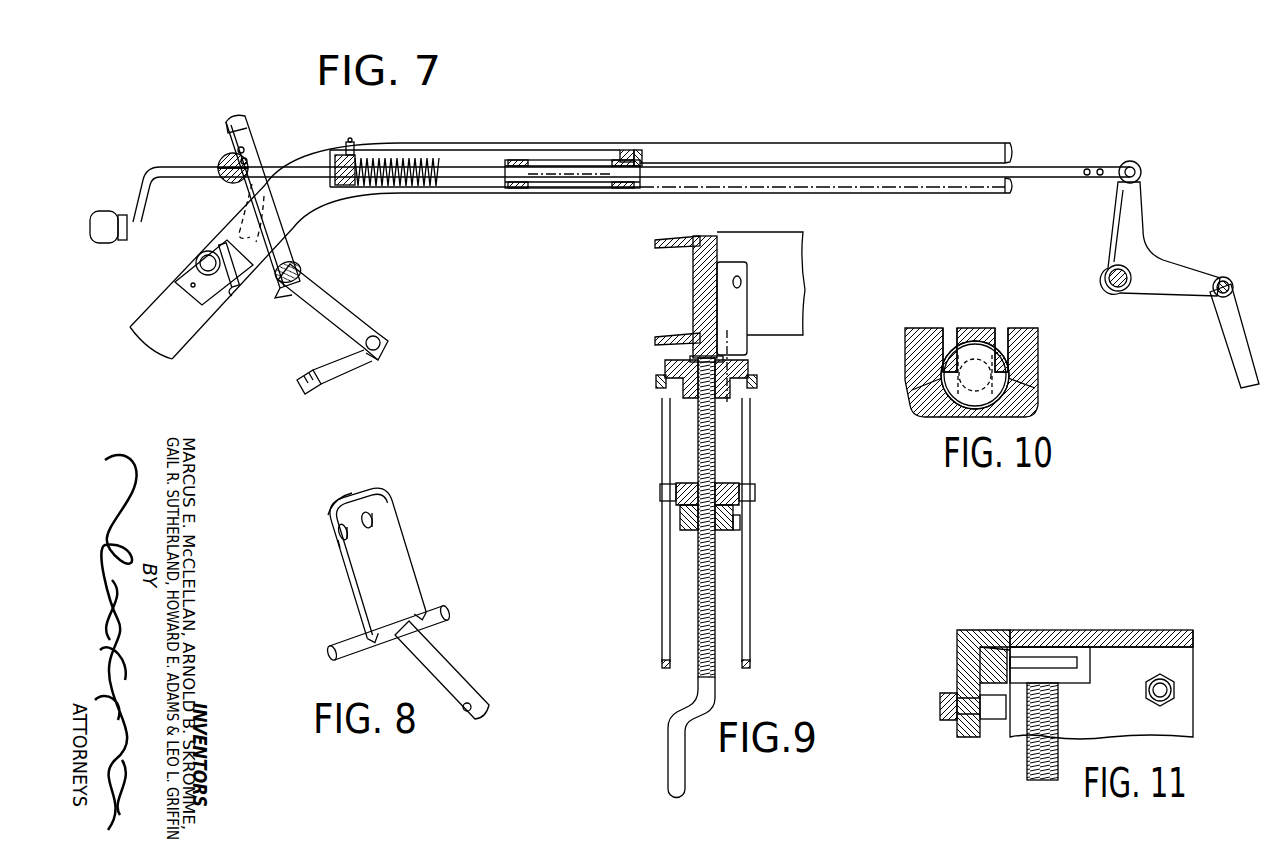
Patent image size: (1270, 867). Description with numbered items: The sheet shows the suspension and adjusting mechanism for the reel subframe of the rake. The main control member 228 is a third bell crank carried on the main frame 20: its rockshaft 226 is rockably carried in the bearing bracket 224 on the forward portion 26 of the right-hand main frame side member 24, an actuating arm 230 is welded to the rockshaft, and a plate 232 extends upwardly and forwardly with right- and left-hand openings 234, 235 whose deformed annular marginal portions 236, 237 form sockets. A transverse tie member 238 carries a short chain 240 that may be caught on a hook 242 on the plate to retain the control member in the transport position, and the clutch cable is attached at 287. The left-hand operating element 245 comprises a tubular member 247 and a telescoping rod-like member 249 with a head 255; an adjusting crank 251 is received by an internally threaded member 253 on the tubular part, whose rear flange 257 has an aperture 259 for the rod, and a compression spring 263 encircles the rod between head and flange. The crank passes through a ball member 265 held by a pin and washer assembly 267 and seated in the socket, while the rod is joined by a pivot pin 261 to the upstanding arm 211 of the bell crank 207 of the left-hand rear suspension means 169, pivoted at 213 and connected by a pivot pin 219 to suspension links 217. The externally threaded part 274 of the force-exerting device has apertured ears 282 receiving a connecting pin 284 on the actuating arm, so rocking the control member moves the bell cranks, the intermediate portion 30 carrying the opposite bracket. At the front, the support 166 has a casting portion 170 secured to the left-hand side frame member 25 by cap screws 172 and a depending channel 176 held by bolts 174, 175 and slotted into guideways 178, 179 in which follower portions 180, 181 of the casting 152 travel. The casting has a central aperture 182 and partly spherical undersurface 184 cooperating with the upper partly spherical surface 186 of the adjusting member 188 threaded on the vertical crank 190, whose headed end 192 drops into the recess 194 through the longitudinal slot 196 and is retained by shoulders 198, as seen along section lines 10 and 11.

In FIG. 7, the main frame 20 is at (910, 118).
In FIG. 7, the right-hand main frame side member 24 is at (842, 130).
In FIG. 9, the left-hand side frame member 25 is at (658, 241).
In FIG. 11, the left-hand side frame member 25 is at (1194, 735).
In FIG. 7, the forward portion of the right-hand main frame side member 26 is at (158, 310).
In FIG. 7, the intermediate portion of the right-hand main frame side member 30 is at (775, 130).
In FIG. 7, the left-hand rear suspension means 169 is at (1193, 228).
In FIG. 9, the support 166 is at (660, 415).
In FIG. 9, the casting 152 is at (724, 484).
In FIG. 9, the casting portion 170 is at (740, 268).
In FIG. 10, the casting portion 170 is at (1032, 365).
In FIG. 11, the casting portion 170 is at (1055, 631).
In FIG. 9, the cap screws 172 is at (742, 283).
In FIG. 9, the right-hand set of bolts 174 is at (656, 382).
In FIG. 9, the left-hand set of bolts 175 is at (757, 382).
In FIG. 9, the depending channel 176 is at (662, 666).
In FIG. 9, the right-hand vertical guideway 178 is at (664, 610).
In FIG. 9, the left-hand vertical guideway 179 is at (751, 612).
In FIG. 9, the right-hand follower portion 180 is at (660, 494).
In FIG. 9, the left-hand follower portion 181 is at (755, 494).
In FIG. 9, the central aperture 182 is at (690, 484).
In FIG. 9, the partly spherical undersurface 184 is at (684, 512).
In FIG. 9, the upper partly spherical surface 186 is at (745, 502).
In FIG. 9, the adjusting member 188 is at (738, 530).
In FIG. 9, the crank 190 is at (700, 566).
In FIG. 10, the crank 190 is at (1020, 412).
In FIG. 11, the crank 190 is at (1027, 766).
In FIG. 9, the headed end 192 is at (748, 372).
In FIG. 10, the headed end 192 is at (940, 385).
In FIG. 11, the headed end 192 is at (1003, 630).
In FIG. 9, the recess 194 is at (678, 372).
In FIG. 10, the recess 194 is at (1015, 386).
In FIG. 11, the recess 194 is at (1034, 650).
In FIG. 10, the longitudinal slot 196 is at (966, 330).
In FIG. 11, the longitudinal slot 196 is at (1088, 650).
In FIG. 10, the shoulders 198 is at (1001, 328).
In FIG. 7, the bell crank 207 is at (1108, 240).
In FIG. 7, the upstanding arm 211 is at (1115, 205).
In FIG. 7, the pivot 213 is at (1117, 286).
In FIG. 7, the suspension links 217 is at (1240, 370).
In FIG. 7, the pivot pin 219 is at (1232, 270).
In FIG. 7, the bearing bracket 224 is at (296, 266).
In FIG. 7, the rockshaft 226 is at (302, 278).
In FIG. 8, the rockshaft 226 is at (406, 620).
In FIG. 7, the main control member 228 is at (228, 126).
In FIG. 8, the main control member 228 is at (420, 546).
In FIG. 7, the actuating arm 230 is at (346, 316).
In FIG. 8, the actuating arm 230 is at (440, 678).
In FIG. 7, the plate 232 is at (224, 133).
In FIG. 8, the plate 232 is at (350, 492).
In FIG. 8, the right-hand opening 234 is at (371, 514).
In FIG. 7, the left-hand opening 235 is at (247, 160).
In FIG. 8, the left-hand opening 235 is at (338, 530).
In FIG. 8, the annular marginal portion 236 is at (377, 524).
In FIG. 7, the annular partially spherical portion 237 is at (244, 150).
In FIG. 8, the annular partially spherical portion 237 is at (341, 538).
In FIG. 7, the transverse tie member 238 is at (196, 260).
In FIG. 7, the chain 240 is at (232, 290).
In FIG. 7, the hook 242 is at (238, 228).
In FIG. 7, the left-hand operating element 245 is at (633, 121).
In FIG. 7, the tubular member 247 is at (466, 160).
In FIG. 7, the rod-like member 249 is at (958, 165).
In FIG. 7, the adjusting crank 251 is at (292, 166).
In FIG. 7, the internally threaded member 253 is at (350, 158).
In FIG. 7, the head 255 is at (506, 175).
In FIG. 7, the flange 257 is at (640, 152).
In FIG. 7, the aperture 259 is at (640, 193).
In FIG. 7, the pivot pin 261 is at (1136, 163).
In FIG. 7, the compression spring 263 is at (530, 183).
In FIG. 7, the ball member 265 is at (222, 160).
In FIG. 7, the pin and washer assembly 267 is at (220, 180).
In FIG. 7, the externally threaded part 274 is at (302, 378).
In FIG. 7, the apertured ears 282 is at (372, 360).
In FIG. 7, the connecting pin 284 is at (380, 343).
In FIG. 8, the cable connection 287 is at (339, 546).
In FIG. 9, the section line 10— 10 is at (737, 372).
In FIG. 9, the section line 11— 11 is at (745, 338).